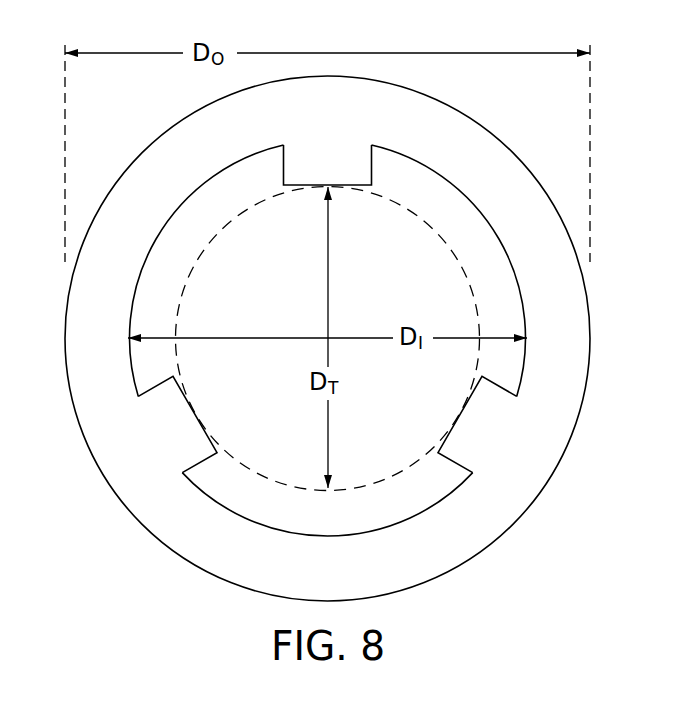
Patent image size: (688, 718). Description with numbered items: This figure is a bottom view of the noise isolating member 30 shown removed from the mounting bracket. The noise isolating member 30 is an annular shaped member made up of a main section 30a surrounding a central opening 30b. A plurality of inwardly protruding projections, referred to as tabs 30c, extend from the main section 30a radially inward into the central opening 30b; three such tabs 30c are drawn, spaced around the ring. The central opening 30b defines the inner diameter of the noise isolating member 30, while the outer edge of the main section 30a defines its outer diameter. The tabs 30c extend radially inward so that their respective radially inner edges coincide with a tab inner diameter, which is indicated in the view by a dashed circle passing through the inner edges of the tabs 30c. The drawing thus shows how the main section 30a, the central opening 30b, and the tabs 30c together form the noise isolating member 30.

The noise isolating member 30 is at (301, 338).
The main section 30a is at (490, 173).
The central opening 30b is at (495, 232).
The inwardly protruding tabs 30c is at (303, 173).